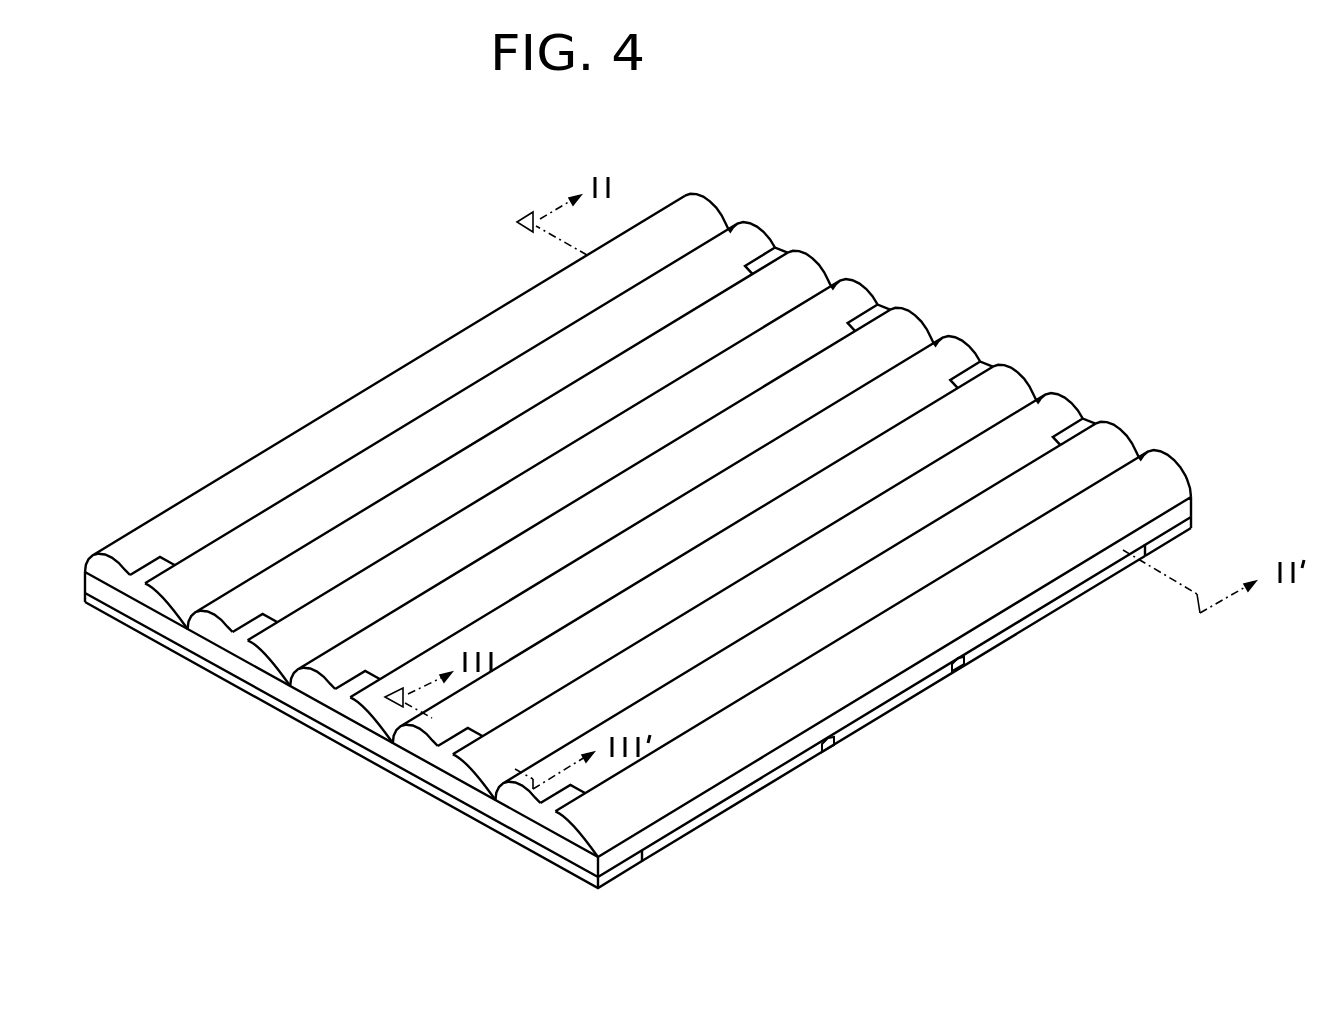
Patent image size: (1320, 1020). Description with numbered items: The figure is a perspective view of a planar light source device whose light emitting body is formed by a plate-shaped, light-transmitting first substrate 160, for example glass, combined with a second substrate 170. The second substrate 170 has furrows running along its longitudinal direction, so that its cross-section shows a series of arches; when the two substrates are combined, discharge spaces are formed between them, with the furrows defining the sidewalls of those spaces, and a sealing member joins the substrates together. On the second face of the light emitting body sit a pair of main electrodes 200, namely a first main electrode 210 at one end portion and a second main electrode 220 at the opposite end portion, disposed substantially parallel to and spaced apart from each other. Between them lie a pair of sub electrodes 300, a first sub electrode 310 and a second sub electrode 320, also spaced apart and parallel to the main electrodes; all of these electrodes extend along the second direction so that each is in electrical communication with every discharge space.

The first substrate 160 is at (1190, 512).
The second substrate 170 is at (1165, 467).
The main electrodes 200 is at (962, 905).
The first main electrode 210 is at (641, 869).
The second main electrode 220 is at (1166, 546).
The sub electrodes 300 is at (1052, 772).
The first sub electrode 310 is at (839, 753).
The second sub electrode 320 is at (967, 672).